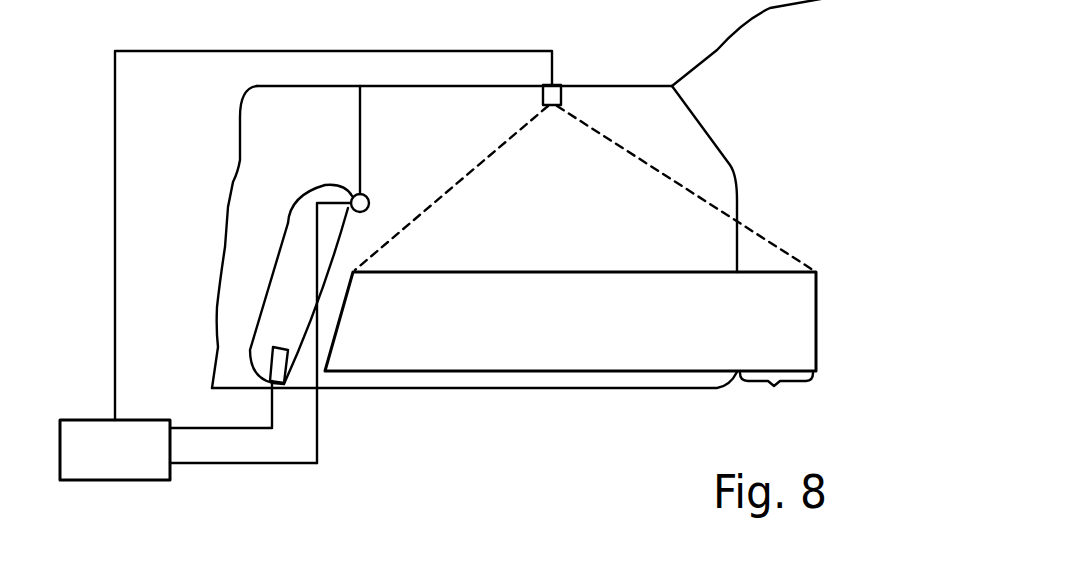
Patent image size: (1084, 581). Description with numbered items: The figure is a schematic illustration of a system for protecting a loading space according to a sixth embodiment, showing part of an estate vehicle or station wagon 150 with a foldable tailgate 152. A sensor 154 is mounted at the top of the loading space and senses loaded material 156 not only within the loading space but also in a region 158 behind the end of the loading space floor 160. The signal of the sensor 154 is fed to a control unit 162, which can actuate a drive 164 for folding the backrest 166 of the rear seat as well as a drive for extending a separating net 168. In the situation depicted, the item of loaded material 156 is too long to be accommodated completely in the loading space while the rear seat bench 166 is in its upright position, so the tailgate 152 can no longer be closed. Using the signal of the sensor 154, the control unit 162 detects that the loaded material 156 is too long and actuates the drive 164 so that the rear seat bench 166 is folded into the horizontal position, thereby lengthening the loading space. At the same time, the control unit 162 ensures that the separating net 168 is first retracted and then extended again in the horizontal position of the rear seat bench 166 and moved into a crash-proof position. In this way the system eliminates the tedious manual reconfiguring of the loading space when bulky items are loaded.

The estate vehicle 150 is at (628, 84).
The tailgate 152 is at (717, 52).
The sensor 154 is at (557, 85).
The loaded material 156 is at (565, 331).
The region behind the end of the loading space floor 158 is at (776, 394).
The loading space floor 160 is at (538, 392).
The control unit 162 is at (137, 464).
The drive 164 is at (275, 354).
The backrest 166 is at (297, 258).
The separating net 168 is at (360, 150).